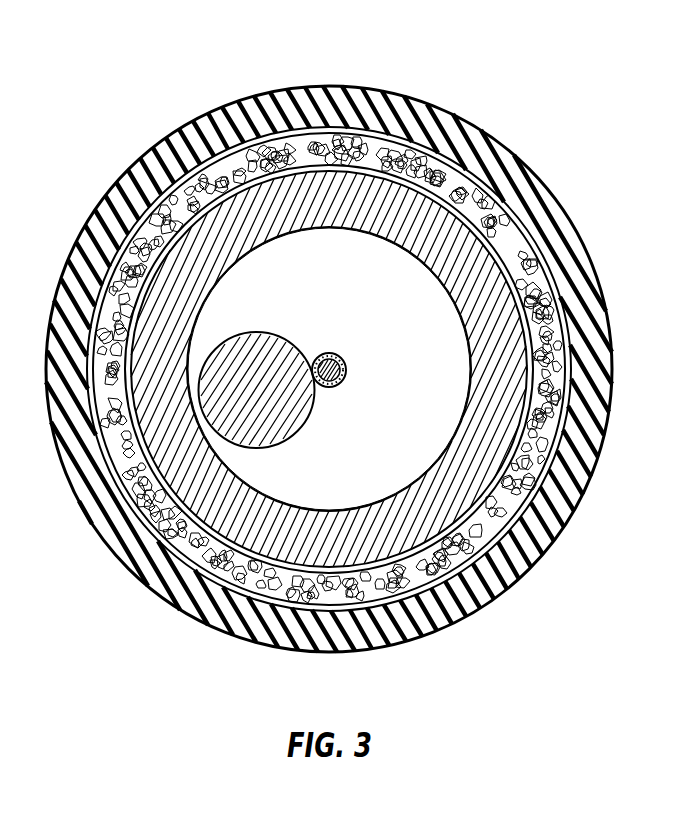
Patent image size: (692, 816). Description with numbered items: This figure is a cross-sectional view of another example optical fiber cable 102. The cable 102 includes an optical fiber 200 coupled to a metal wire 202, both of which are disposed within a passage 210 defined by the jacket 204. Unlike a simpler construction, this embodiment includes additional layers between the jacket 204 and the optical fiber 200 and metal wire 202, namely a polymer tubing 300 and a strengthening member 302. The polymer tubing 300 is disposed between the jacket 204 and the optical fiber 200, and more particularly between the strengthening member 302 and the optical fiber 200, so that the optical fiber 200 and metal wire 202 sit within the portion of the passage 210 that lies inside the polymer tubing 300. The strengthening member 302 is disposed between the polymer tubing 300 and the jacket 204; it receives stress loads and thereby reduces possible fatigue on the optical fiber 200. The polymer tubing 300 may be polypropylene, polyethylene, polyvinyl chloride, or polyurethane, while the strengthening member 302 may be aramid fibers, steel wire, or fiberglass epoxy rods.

The optical fiber cable 102 is at (530, 83).
The jacket 204 is at (567, 212).
The strengthening member 302 is at (553, 352).
The polymer tubing 300 is at (492, 422).
The passage 210 is at (315, 243).
The metal wire 202 is at (258, 332).
The optical fiber 200 is at (340, 340).